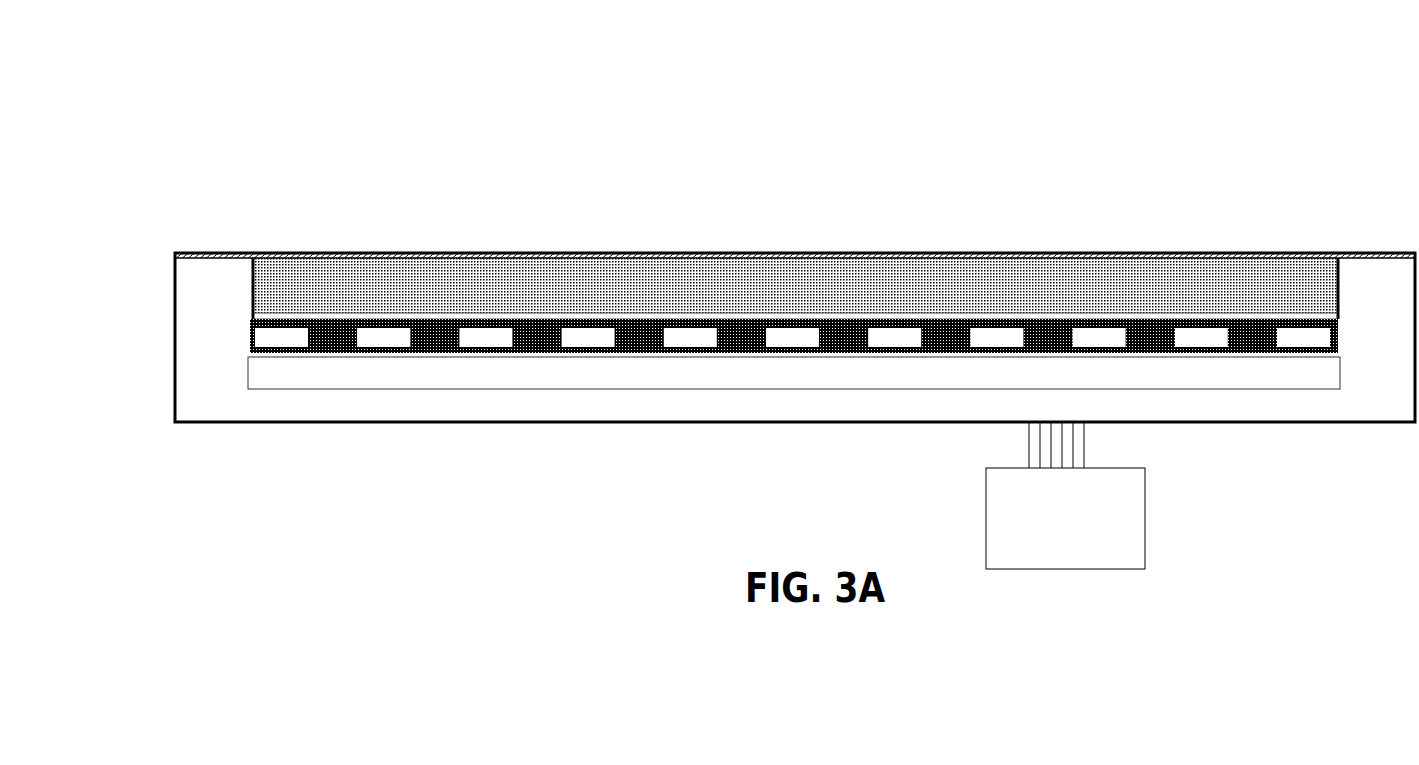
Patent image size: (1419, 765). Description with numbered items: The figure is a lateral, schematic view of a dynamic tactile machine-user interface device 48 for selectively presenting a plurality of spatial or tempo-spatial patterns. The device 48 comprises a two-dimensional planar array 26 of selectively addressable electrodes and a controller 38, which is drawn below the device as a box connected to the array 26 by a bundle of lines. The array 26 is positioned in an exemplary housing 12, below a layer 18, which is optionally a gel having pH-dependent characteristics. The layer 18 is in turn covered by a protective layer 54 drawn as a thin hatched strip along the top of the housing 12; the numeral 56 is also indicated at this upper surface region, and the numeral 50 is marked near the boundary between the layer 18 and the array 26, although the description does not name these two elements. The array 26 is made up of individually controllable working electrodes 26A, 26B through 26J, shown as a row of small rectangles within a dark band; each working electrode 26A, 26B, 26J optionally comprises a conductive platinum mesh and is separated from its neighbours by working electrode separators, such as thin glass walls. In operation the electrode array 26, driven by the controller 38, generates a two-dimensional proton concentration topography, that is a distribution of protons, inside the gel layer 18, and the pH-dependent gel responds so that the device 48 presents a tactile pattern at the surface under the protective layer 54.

The housing 12 is at (218, 348).
The layer 18 is at (628, 287).
The array of electrodes 26 is at (431, 335).
The working electrode 26A is at (270, 322).
The working electrode 26B is at (378, 322).
The working electrode 26J is at (1319, 315).
The controller 38 is at (1147, 517).
The dynamic tactile machine-user interface device 48 is at (333, 175).
The gap layer 50 is at (1275, 315).
The protective layer 54 is at (576, 253).
The top surface 56 is at (530, 253).